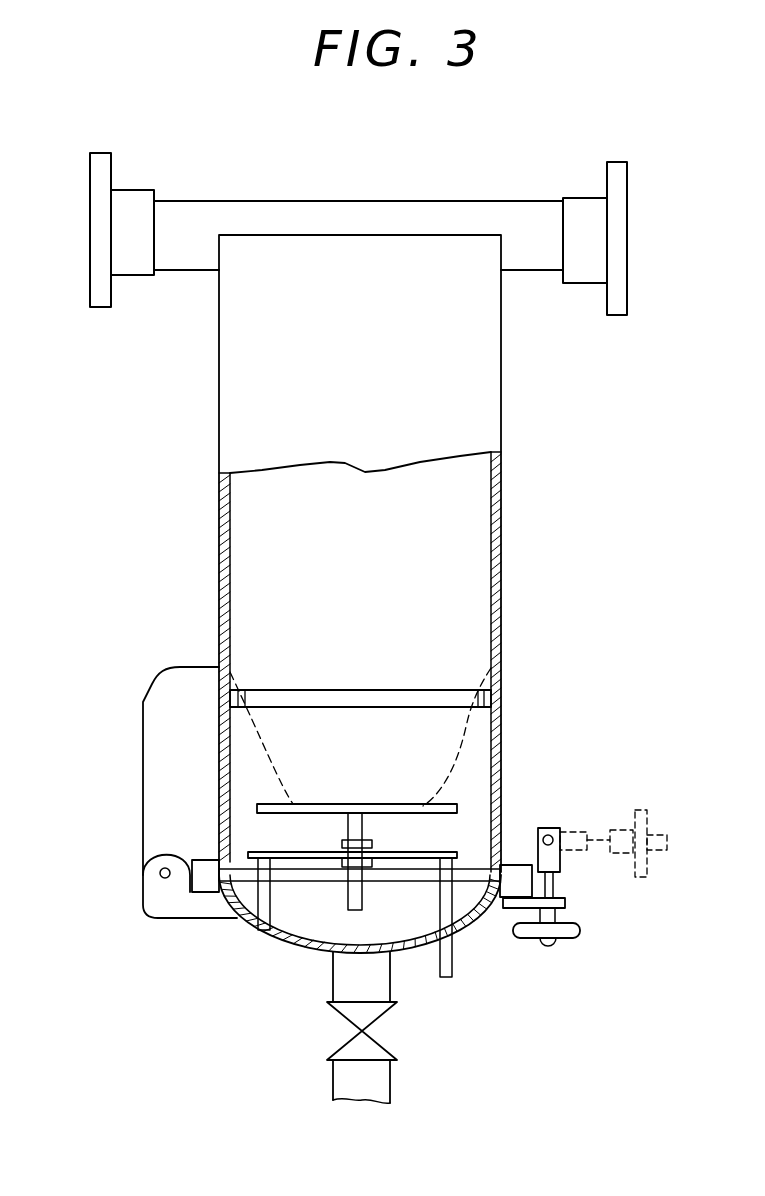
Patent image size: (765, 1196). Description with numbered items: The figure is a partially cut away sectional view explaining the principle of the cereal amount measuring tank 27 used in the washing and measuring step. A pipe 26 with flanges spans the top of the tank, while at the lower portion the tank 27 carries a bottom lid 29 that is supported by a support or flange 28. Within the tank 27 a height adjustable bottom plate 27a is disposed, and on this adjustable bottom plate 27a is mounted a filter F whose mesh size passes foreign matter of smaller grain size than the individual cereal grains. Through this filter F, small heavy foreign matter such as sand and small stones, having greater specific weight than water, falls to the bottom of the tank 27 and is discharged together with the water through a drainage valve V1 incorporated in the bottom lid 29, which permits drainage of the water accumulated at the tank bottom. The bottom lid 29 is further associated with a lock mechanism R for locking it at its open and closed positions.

The inlet pipe with flanges 26 is at (482, 215).
The cereal amount measuring tank 27 is at (490, 410).
The height adjustable bottom plate 27a is at (447, 805).
The support or flange 28 is at (175, 912).
The bottom lid 29 is at (477, 927).
The filter F is at (462, 730).
The lock mechanism R is at (565, 917).
The drainage valve V1 is at (377, 1046).